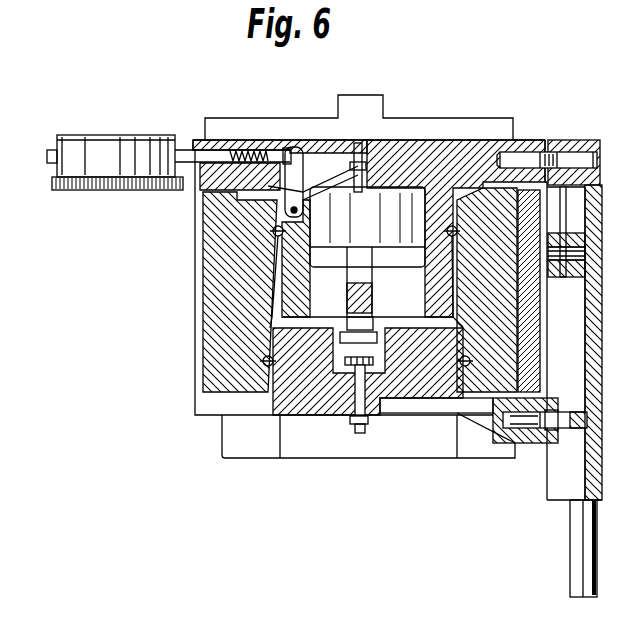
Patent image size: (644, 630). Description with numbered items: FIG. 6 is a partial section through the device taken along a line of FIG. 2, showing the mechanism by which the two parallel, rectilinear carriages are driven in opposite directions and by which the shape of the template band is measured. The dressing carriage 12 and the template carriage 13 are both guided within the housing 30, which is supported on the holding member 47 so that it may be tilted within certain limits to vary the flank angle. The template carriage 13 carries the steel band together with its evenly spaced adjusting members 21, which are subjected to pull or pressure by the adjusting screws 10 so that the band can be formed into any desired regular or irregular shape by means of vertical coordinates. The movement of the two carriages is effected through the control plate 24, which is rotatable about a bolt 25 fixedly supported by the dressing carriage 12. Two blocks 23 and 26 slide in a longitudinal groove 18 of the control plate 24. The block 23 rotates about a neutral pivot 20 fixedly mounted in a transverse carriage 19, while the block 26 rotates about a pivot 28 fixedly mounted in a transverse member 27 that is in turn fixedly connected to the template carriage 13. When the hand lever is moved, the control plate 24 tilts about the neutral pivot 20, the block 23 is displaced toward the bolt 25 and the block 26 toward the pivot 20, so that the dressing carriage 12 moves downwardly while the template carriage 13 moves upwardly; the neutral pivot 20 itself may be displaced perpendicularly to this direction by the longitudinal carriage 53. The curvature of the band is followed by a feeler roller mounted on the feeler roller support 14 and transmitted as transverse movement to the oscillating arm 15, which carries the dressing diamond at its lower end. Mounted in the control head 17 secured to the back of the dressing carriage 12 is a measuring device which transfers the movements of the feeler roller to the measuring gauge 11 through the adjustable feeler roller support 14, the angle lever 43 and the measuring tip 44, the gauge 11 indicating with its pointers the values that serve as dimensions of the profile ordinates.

The adjusting screws 10 is at (362, 433).
The measuring gauge 11 is at (97, 150).
The dressing carriage 12 is at (447, 193).
The template carriage 13 is at (290, 400).
The feeler roller support 14 is at (350, 147).
The oscillating arm 15 is at (387, 197).
The control head 17 is at (213, 157).
The longitudinal groove 18 is at (570, 227).
The transverse carriage 19 is at (553, 210).
The neutral pivot 20 is at (568, 253).
The adjusting members 21 is at (337, 350).
The block 23 is at (580, 270).
The control plate 24 is at (596, 342).
The bolt 25 is at (578, 157).
The block 26 is at (557, 404).
The transverse member 27 is at (470, 403).
The pivot 28 is at (577, 420).
The housing 30 is at (228, 373).
The angle lever 43 is at (313, 160).
The measuring tip 44 is at (287, 157).
The holding member 47 is at (498, 120).
The longitudinal carriage 53 is at (530, 327).